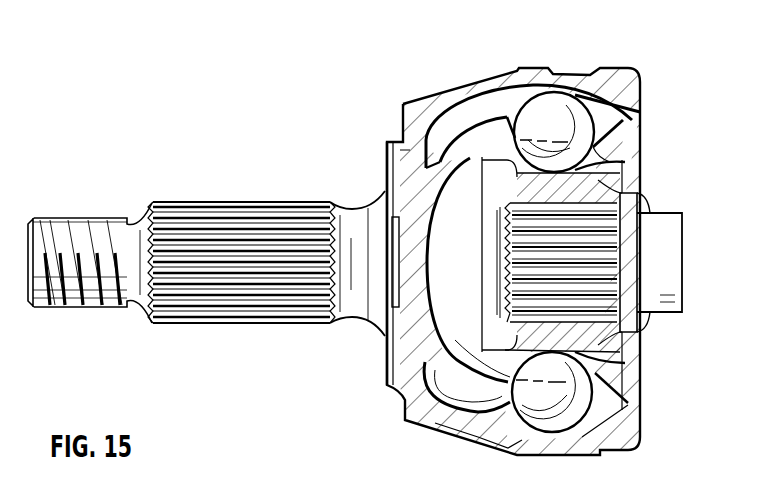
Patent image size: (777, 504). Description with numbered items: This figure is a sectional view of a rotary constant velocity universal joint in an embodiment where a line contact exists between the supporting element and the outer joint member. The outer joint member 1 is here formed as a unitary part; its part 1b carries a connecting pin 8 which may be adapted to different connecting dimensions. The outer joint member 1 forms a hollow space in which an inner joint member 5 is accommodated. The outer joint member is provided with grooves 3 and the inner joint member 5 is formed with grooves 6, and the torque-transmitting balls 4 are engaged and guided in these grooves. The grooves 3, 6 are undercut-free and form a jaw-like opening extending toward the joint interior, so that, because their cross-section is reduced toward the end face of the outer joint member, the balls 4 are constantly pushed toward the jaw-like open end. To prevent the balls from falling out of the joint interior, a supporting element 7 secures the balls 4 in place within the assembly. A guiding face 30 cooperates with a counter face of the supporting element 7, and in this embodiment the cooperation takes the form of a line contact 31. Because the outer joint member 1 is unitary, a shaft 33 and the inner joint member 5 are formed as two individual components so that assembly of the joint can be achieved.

The outer joint member 1 is at (591, 90).
The part of the outer joint member 1b is at (395, 168).
The grooves 3 is at (600, 120).
The torque-transmitting balls 4 is at (537, 110).
The inner joint member 5 is at (600, 193).
The grooves 6 is at (606, 167).
The supporting element 7 is at (472, 177).
The connecting pin 8 is at (216, 192).
The guiding face 30 is at (445, 177).
The line contact 31 is at (405, 150).
The shaft 33 is at (657, 230).